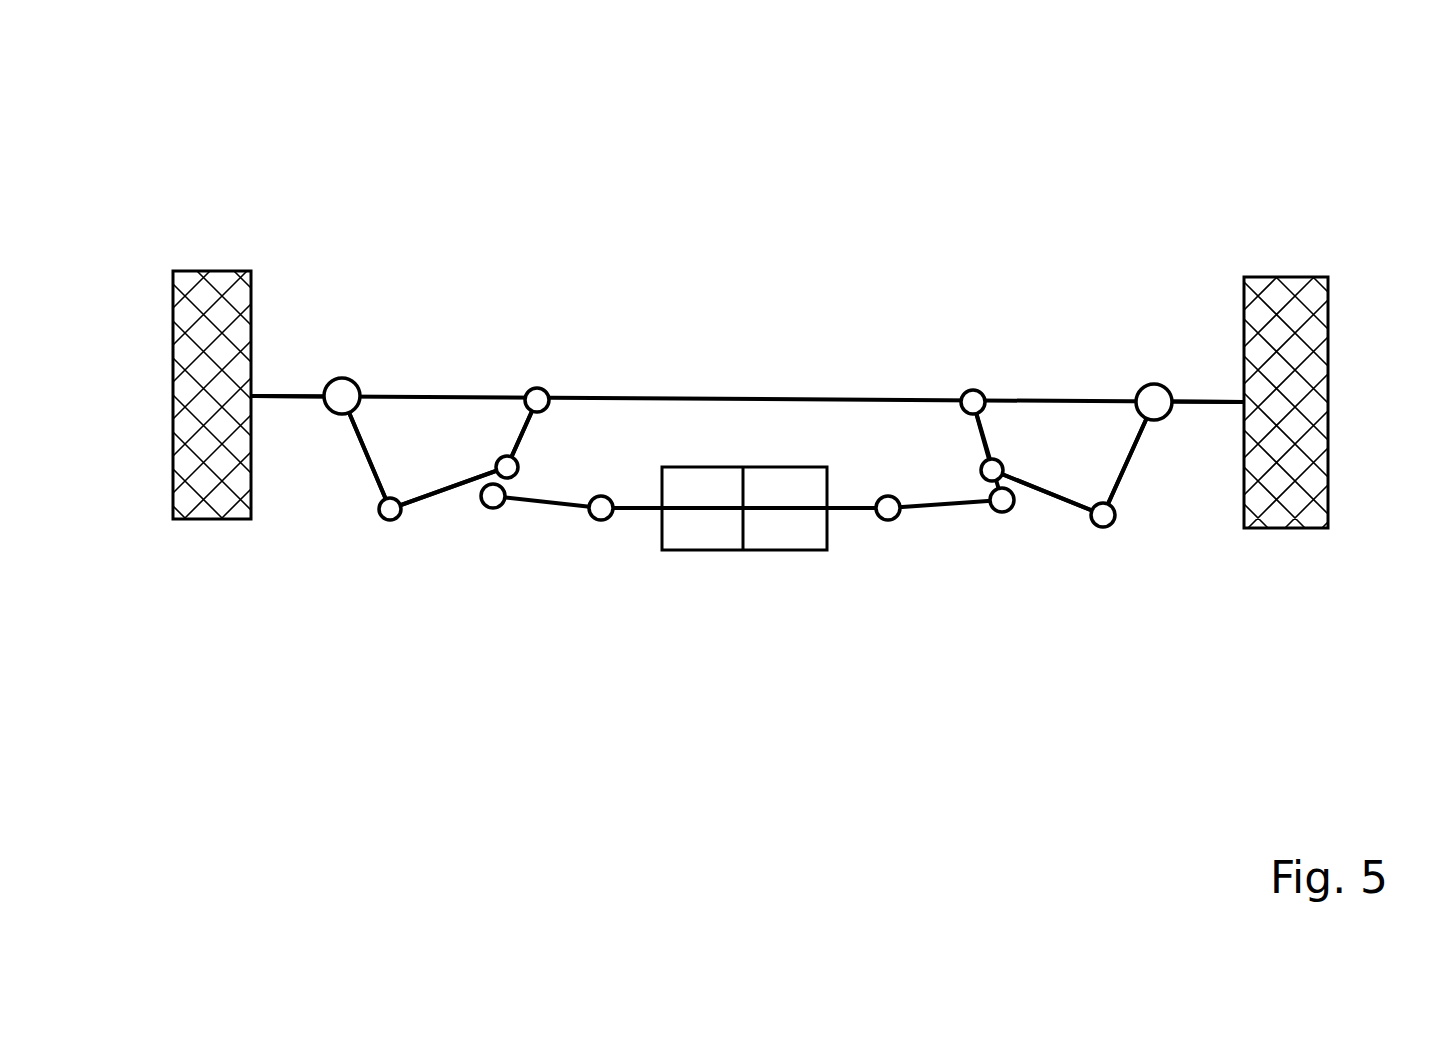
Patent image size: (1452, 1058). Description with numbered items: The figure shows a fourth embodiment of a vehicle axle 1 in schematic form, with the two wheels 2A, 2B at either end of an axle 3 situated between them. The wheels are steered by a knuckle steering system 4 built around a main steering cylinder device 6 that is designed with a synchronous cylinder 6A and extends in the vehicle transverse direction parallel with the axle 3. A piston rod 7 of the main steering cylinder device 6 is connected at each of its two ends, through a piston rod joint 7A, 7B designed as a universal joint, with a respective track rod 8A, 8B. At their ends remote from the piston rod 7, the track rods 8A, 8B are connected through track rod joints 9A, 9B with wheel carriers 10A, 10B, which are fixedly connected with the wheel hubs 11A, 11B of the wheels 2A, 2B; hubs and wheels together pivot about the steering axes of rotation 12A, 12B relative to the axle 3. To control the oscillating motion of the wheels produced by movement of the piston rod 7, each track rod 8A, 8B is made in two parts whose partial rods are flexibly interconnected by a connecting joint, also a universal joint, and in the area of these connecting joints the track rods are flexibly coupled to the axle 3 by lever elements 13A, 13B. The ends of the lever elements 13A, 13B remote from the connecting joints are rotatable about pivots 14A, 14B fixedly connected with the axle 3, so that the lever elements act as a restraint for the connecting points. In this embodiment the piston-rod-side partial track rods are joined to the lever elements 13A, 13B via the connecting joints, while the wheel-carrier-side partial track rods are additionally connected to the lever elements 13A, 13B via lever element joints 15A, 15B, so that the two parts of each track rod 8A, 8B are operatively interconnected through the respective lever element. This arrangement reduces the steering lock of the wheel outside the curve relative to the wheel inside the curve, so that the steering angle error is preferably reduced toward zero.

The vehicle axle 1 is at (196, 158).
The wheel 2A is at (210, 373).
The wheel 2B is at (1330, 362).
The axle 3 is at (812, 397).
The knuckle steering system 4 is at (623, 612).
The main steering cylinder device 6 is at (775, 568).
The synchronous cylinder 6A is at (697, 512).
The piston rod 7 is at (843, 512).
The piston rod joint 7A is at (601, 520).
The piston rod joint 7B is at (889, 520).
The track rod 8A is at (430, 518).
The track rod 8B is at (1050, 550).
The track rod joint 9A is at (380, 505).
The track rod joint 9B is at (1114, 506).
The wheel carrier 10A is at (363, 460).
The wheel carrier 10B is at (1120, 485).
The wheel hub 11A is at (270, 390).
The wheel hub 11B is at (1197, 393).
The steering axis of rotation 12A is at (337, 380).
The steering axis of rotation 12B is at (1153, 385).
The lever element 13A is at (525, 436).
The lever element 13B is at (980, 432).
The pivot 14A is at (532, 395).
The pivot 14B is at (967, 385).
The lever element joint 15A is at (508, 505).
The lever element joint 15B is at (997, 512).